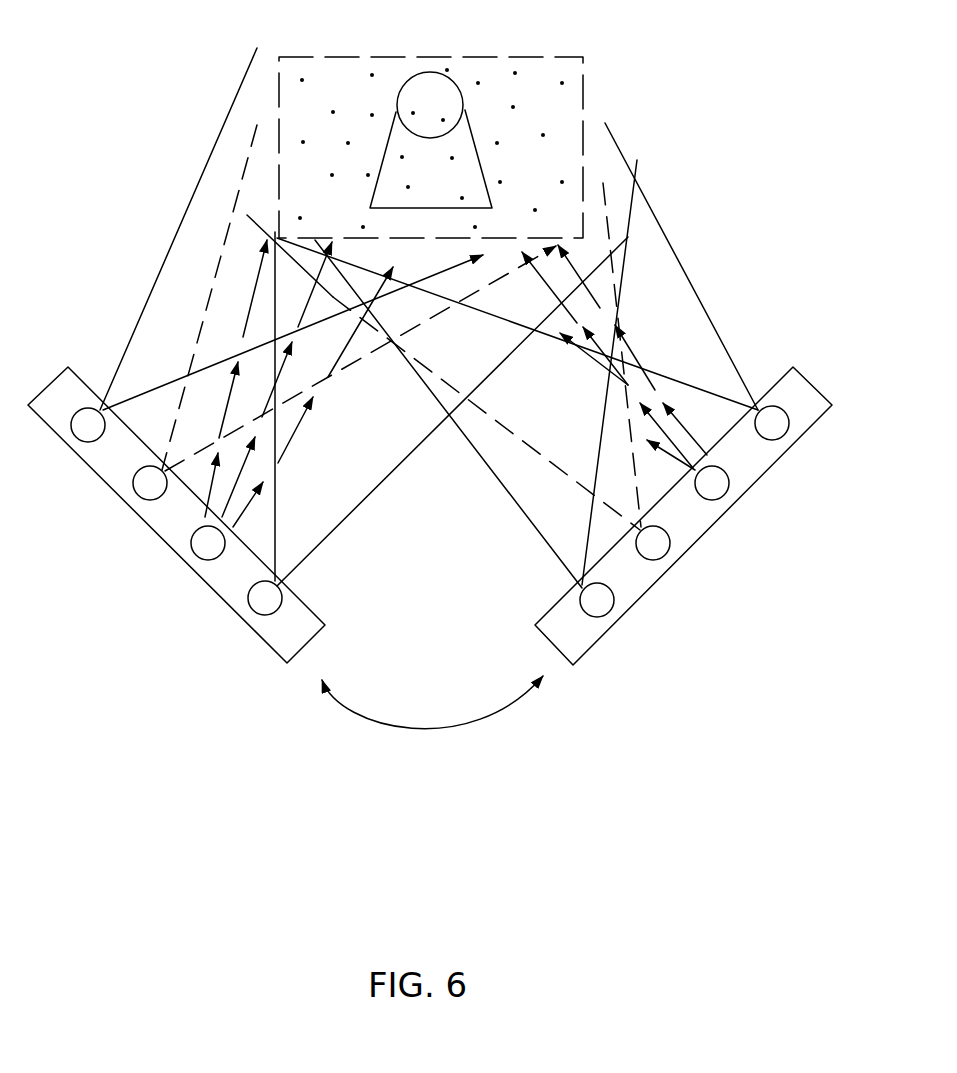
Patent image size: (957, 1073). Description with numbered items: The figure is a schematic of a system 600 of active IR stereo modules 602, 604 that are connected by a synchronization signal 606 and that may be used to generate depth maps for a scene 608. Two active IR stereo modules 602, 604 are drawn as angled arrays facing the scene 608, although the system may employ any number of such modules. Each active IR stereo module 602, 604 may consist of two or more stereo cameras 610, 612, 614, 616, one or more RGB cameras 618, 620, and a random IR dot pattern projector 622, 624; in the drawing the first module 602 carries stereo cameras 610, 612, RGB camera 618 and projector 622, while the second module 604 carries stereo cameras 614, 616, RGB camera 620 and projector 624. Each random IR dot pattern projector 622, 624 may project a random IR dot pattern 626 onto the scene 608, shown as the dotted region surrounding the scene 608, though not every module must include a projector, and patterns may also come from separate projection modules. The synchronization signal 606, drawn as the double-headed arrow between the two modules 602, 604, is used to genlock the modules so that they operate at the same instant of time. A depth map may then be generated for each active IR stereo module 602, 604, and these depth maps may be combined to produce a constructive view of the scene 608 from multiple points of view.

The system 600 is at (441, 947).
The active IR stereo module 602 is at (56, 380).
The active IR stereo module 604 is at (815, 375).
The synchronization signal 606 is at (412, 728).
The scene 608 is at (430, 100).
The stereo camera 610 is at (98, 445).
The stereo camera 612 is at (265, 616).
The stereo camera 614 is at (598, 618).
The stereo camera 616 is at (770, 441).
The RGB camera 618 is at (153, 500).
The RGB camera 620 is at (654, 561).
The random IR dot pattern projector 622 is at (210, 562).
The random IR dot pattern projector 624 is at (713, 501).
The random IR dot pattern 626 is at (583, 108).